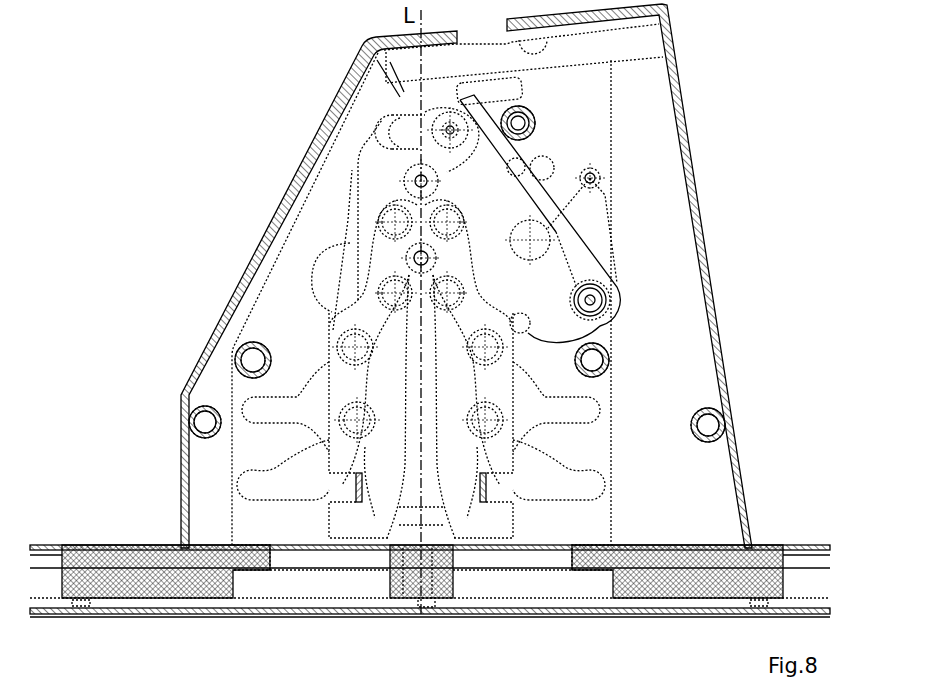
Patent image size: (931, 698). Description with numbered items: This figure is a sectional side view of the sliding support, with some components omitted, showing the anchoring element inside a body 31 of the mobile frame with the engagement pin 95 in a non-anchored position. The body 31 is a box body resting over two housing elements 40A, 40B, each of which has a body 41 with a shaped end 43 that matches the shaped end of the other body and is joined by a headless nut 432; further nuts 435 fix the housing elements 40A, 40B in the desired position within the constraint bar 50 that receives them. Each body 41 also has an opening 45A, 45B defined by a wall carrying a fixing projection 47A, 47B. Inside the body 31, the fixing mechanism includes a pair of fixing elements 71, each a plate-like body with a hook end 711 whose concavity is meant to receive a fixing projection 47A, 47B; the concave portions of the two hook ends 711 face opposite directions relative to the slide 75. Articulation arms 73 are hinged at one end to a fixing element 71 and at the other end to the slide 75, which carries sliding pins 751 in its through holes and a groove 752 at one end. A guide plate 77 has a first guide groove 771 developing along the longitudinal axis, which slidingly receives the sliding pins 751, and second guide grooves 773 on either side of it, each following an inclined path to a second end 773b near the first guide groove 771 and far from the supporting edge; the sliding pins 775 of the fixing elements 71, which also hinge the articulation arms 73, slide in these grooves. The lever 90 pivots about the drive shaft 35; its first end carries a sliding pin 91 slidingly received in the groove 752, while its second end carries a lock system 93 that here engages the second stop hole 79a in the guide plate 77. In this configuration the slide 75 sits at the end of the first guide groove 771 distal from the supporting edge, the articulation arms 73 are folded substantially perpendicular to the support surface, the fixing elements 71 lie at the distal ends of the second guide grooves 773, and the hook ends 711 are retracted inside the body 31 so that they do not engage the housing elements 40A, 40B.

The body 31 is at (185, 388).
The drive shaft 35 is at (540, 234).
The body 41 is at (108, 546).
The shaped end 43 is at (415, 590).
The nut 432 is at (430, 605).
The nut 435 is at (80, 605).
The housing element 40A is at (148, 585).
The housing element 40B is at (693, 583).
The opening 45A is at (303, 575).
The opening 45B is at (493, 577).
The fixing projection 47A is at (243, 556).
The fixing projection 47B is at (592, 558).
The constraint bar 50 is at (805, 546).
The fixing element 71 is at (343, 449).
The hook end 711 is at (472, 518).
The articulation arm 73 is at (345, 300).
The slide 75 is at (360, 201).
The sliding pin 751 is at (418, 258).
The groove 752 is at (375, 126).
The guide plate 77 is at (302, 223).
The first guide groove 771 is at (422, 448).
The second guide groove 773 is at (594, 482).
The second end 773b is at (590, 410).
The sliding pin 775 is at (353, 347).
The second stop hole 79a is at (593, 170).
The lever 90 is at (535, 190).
The sliding pin 91 is at (447, 128).
The lock system 93 is at (605, 305).
The engagement pin 95 is at (530, 328).